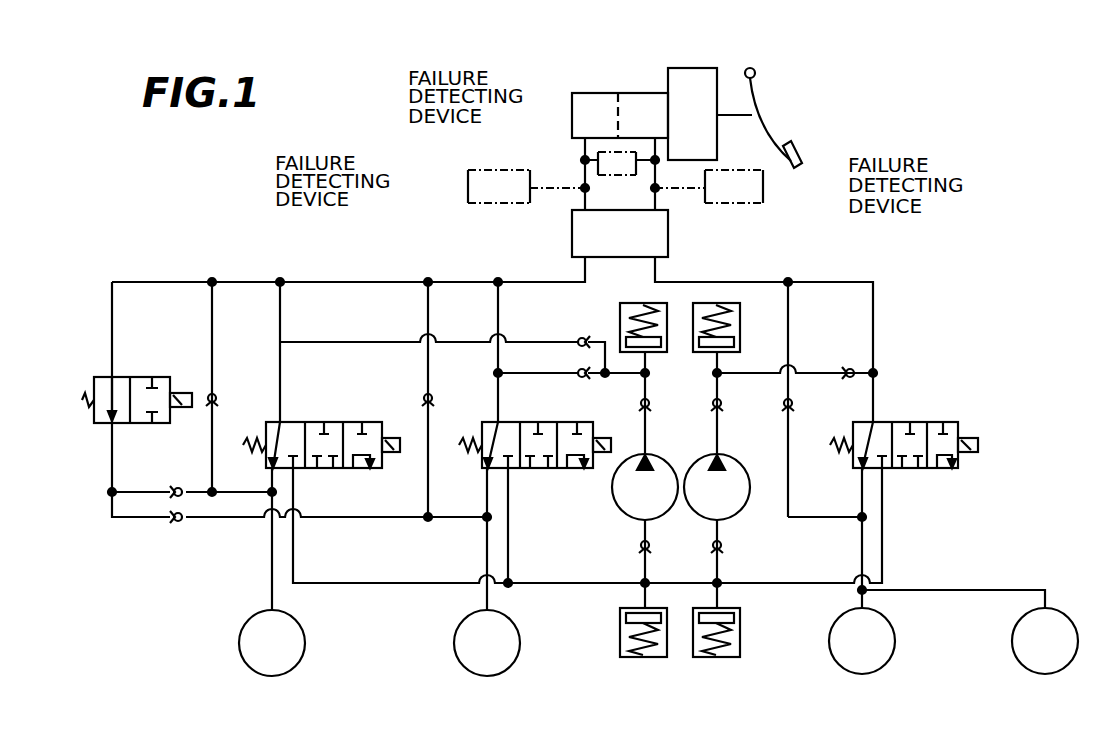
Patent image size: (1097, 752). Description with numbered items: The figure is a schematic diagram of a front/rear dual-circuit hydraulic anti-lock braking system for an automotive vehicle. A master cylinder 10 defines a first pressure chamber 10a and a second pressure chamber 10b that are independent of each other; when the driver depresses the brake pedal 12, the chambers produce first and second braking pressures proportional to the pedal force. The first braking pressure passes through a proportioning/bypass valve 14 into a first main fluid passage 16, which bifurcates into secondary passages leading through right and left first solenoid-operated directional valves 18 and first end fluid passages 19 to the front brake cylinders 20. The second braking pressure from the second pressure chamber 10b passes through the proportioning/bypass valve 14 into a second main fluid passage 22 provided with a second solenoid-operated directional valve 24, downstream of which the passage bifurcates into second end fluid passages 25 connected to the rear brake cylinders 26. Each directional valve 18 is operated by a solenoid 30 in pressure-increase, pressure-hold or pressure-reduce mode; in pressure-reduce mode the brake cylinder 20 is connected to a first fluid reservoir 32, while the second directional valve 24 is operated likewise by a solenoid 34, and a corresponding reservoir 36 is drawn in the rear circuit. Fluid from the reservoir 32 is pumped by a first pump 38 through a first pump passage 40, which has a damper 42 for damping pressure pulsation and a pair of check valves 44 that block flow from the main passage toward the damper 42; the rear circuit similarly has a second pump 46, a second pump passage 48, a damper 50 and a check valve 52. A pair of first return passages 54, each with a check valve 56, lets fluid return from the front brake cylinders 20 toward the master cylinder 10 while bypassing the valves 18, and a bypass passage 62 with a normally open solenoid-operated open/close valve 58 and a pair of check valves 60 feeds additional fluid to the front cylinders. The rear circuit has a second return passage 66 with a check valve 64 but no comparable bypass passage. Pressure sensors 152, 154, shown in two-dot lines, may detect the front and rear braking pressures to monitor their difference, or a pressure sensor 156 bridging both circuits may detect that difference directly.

The master cylinder 10 is at (604, 93).
The first pressure chamber 10a is at (582, 112).
The second pressure chamber 10b is at (646, 93).
The brake pedal 12 is at (770, 138).
The proportioning/bypass valve 14 is at (668, 234).
The first main fluid passage 16 is at (376, 282).
The first solenoid-operated directional valve 18 is at (326, 422).
The first end fluid passage 19 is at (272, 585).
The front brake cylinder 20 is at (296, 658).
The second main fluid passage 22 is at (760, 278).
The second solenoid-operated directional valve 24 is at (906, 422).
The second end fluid passage 25 is at (860, 592).
The rear brake cylinder 26 is at (888, 648).
The solenoid 30 is at (390, 454).
The first fluid reservoir 32 is at (620, 627).
The solenoid 34 is at (966, 440).
The low-pressure reservoir (rear) 36 is at (740, 637).
The first pump 38 is at (626, 514).
The first pump passage 40 is at (648, 434).
The damper 42 is at (620, 313).
The check valve 44 is at (578, 338).
The second pump 46 is at (740, 511).
The second pump passage 48 is at (752, 375).
The damper 50 is at (740, 330).
The check valve 52 is at (848, 379).
The first return passage 54 is at (212, 313).
The check valve 56 is at (216, 394).
The solenoid-operated open/close valve 58 is at (140, 377).
The check valve 60 is at (176, 488).
The bypass passage 62 is at (112, 318).
The check valve 64 is at (784, 410).
The second return passage 66 is at (820, 518).
The pressure sensor 152 is at (468, 187).
The pressure sensor 154 is at (763, 187).
The pressure sensor 156 is at (597, 158).